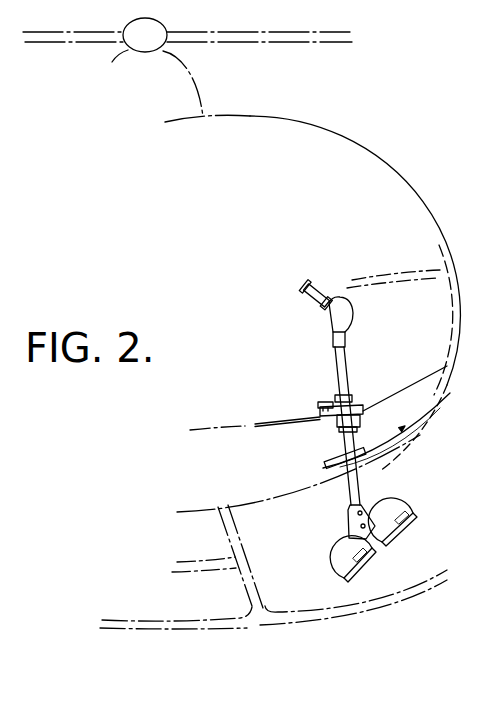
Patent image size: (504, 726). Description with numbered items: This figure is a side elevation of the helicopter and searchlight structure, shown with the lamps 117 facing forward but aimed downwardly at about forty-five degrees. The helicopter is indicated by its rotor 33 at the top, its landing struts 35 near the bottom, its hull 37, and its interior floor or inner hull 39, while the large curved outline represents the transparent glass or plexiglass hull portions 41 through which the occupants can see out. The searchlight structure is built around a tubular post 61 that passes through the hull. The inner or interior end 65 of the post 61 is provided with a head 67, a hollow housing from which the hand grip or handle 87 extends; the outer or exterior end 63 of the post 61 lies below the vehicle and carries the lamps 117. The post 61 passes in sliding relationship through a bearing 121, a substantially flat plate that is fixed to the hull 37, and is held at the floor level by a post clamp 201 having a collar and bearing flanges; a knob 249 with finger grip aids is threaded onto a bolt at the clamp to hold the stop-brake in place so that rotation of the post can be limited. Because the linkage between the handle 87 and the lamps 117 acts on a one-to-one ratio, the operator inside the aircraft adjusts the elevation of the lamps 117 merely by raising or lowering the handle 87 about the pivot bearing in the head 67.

The rotor 33 is at (248, 33).
The transparent hull portions 41 is at (347, 148).
The hand grip or handle 87 is at (323, 296).
The head 67 is at (353, 310).
The inner or interior end 65 is at (322, 323).
The tubular post 61 is at (347, 368).
The knob 249 is at (330, 400).
The post clamp 201 is at (361, 395).
The interior floor or inner hull 39 is at (262, 420).
The bearing 121 is at (336, 450).
The hull 37 is at (246, 503).
The outer or exterior end 63 is at (340, 537).
The lamps 117 is at (400, 496).
The landing struts 35 is at (245, 584).